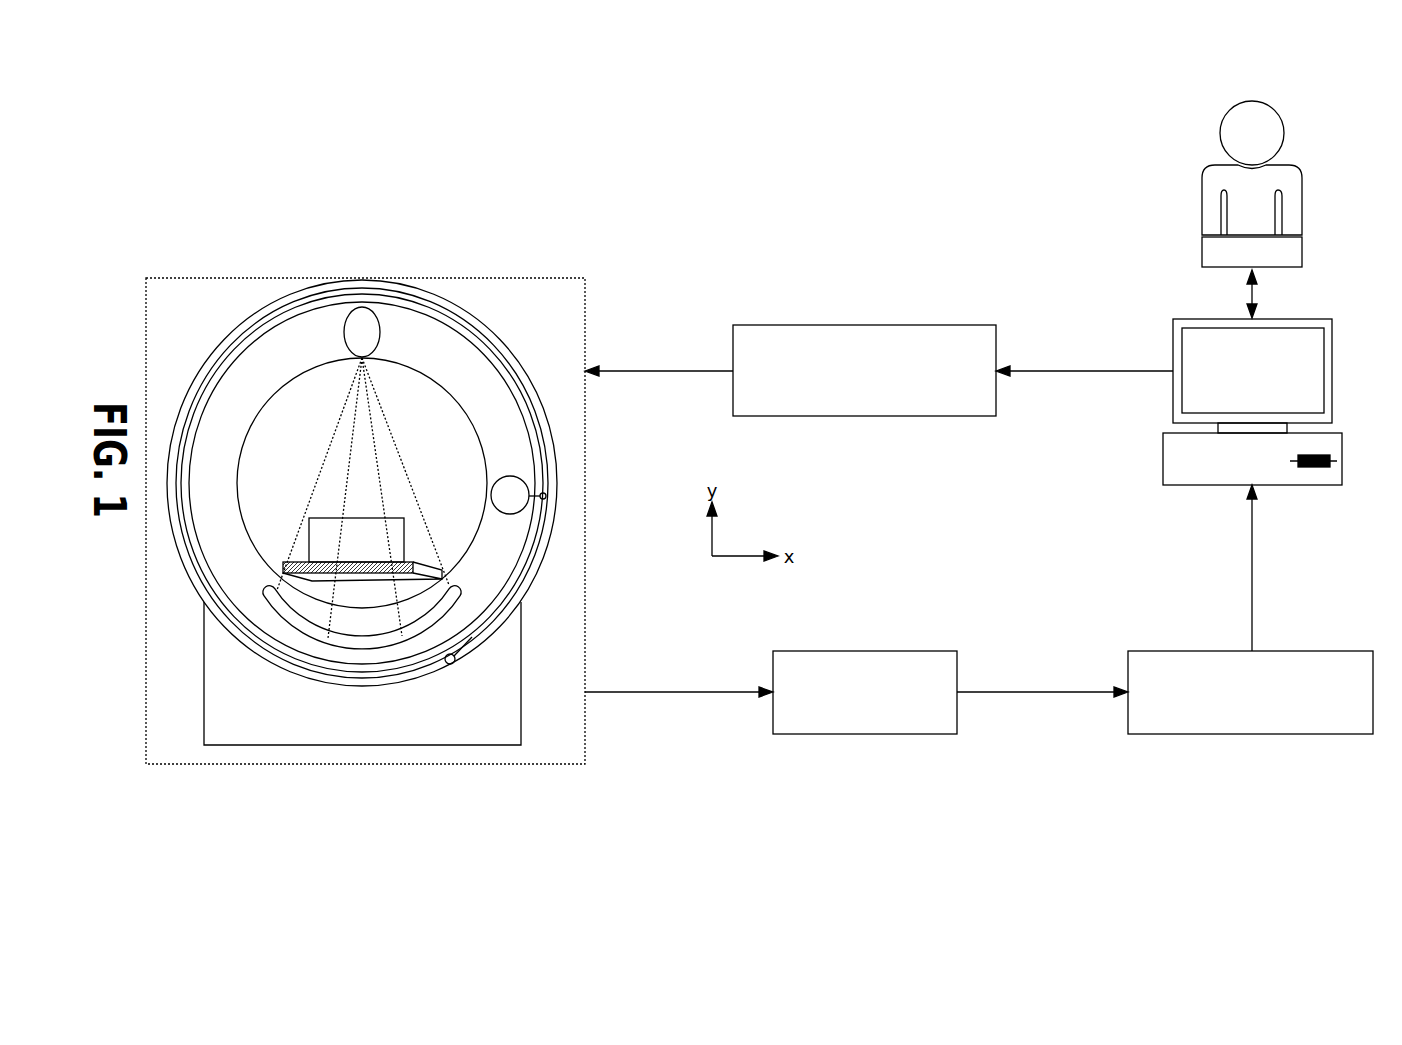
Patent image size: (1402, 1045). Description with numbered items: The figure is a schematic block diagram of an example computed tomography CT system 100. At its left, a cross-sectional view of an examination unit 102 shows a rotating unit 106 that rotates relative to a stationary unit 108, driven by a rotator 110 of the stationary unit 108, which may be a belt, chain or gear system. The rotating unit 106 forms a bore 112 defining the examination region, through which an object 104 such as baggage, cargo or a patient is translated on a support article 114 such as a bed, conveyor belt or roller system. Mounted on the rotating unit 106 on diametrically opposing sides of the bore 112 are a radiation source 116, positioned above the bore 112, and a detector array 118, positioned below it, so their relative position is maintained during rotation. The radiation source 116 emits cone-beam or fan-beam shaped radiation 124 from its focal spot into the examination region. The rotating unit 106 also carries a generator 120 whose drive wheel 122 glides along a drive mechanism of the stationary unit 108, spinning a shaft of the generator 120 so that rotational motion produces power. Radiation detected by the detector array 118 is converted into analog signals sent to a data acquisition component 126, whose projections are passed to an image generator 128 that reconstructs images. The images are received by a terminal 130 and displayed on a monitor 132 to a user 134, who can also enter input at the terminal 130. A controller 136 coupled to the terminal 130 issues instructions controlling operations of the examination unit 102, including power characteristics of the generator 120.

The CT system 100 is at (275, 154).
The examination unit 102 is at (571, 278).
The object 104 is at (320, 518).
The rotating unit 106 is at (538, 413).
The stationary unit 108 is at (561, 437).
The rotator 110 is at (452, 665).
The bore 112 is at (301, 400).
The support article 114 is at (300, 562).
The radiation source 116 is at (368, 325).
The detector array 118 is at (303, 638).
The generator 120 is at (493, 486).
The drive wheel 122 is at (541, 495).
The radiation 124 is at (328, 447).
The data acquisition component 126 is at (773, 651).
The image generator 128 is at (1128, 651).
The terminal 130 is at (1163, 463).
The monitor 132 is at (1173, 320).
The user 134 is at (1202, 175).
The controller 136 is at (733, 325).